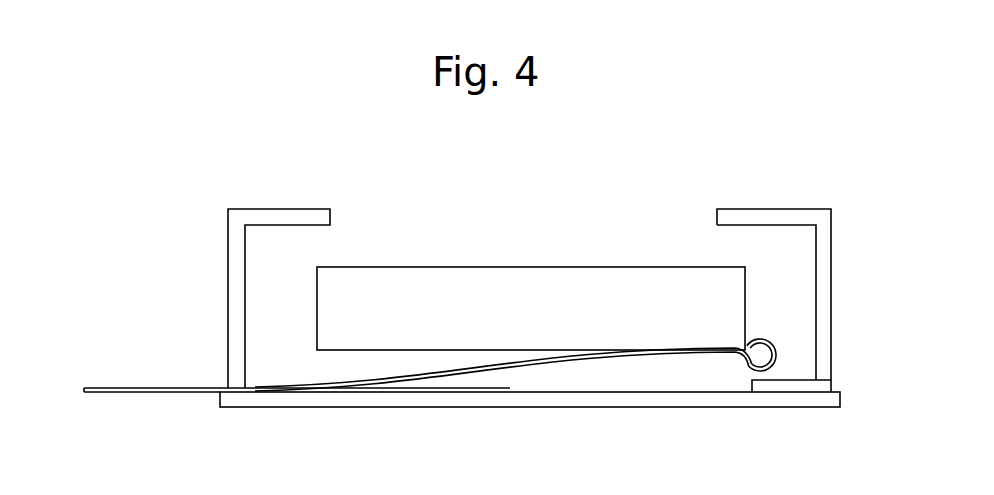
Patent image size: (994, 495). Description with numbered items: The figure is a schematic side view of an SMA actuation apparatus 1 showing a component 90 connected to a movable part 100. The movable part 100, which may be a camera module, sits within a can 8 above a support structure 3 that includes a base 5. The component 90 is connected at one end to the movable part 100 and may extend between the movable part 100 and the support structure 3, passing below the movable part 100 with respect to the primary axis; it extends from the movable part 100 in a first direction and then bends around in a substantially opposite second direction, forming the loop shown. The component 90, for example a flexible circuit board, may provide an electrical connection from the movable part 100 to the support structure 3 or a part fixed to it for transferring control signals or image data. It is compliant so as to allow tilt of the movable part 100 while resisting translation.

The SMA actuation apparatus 1 is at (228, 153).
The can 8 is at (233, 281).
The movable part 100 is at (515, 290).
The component 90 is at (480, 370).
The support structure 3 is at (831, 388).
The base 5 is at (683, 406).